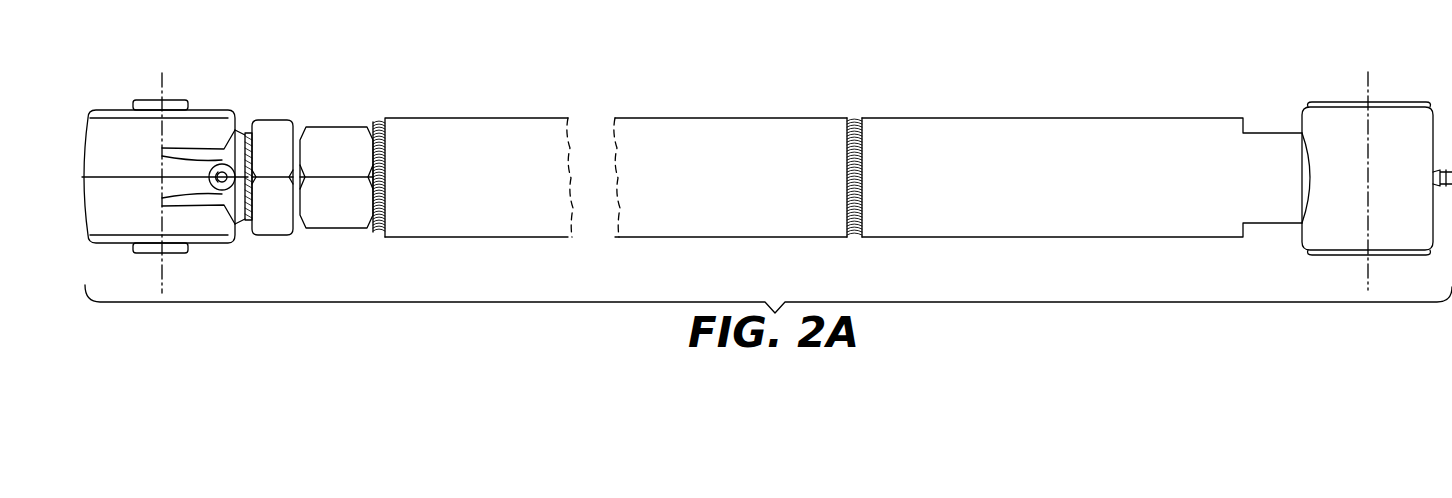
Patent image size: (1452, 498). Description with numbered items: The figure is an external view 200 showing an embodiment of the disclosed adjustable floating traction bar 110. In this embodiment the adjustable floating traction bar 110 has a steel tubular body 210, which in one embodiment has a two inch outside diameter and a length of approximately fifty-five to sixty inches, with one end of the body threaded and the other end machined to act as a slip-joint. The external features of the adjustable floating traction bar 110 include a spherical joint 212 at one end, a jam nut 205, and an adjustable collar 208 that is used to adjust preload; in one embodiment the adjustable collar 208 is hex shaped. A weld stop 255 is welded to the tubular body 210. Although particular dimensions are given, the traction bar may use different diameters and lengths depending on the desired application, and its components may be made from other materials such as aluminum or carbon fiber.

The external view 200 is at (185, 70).
The spherical joint 212 is at (190, 248).
The jam nut 205 is at (270, 130).
The adjustable collar 208 is at (337, 130).
The steel tubular body 210 is at (460, 130).
The weld stop 255 is at (849, 238).
The adjustable floating traction bar 110 is at (1072, 225).